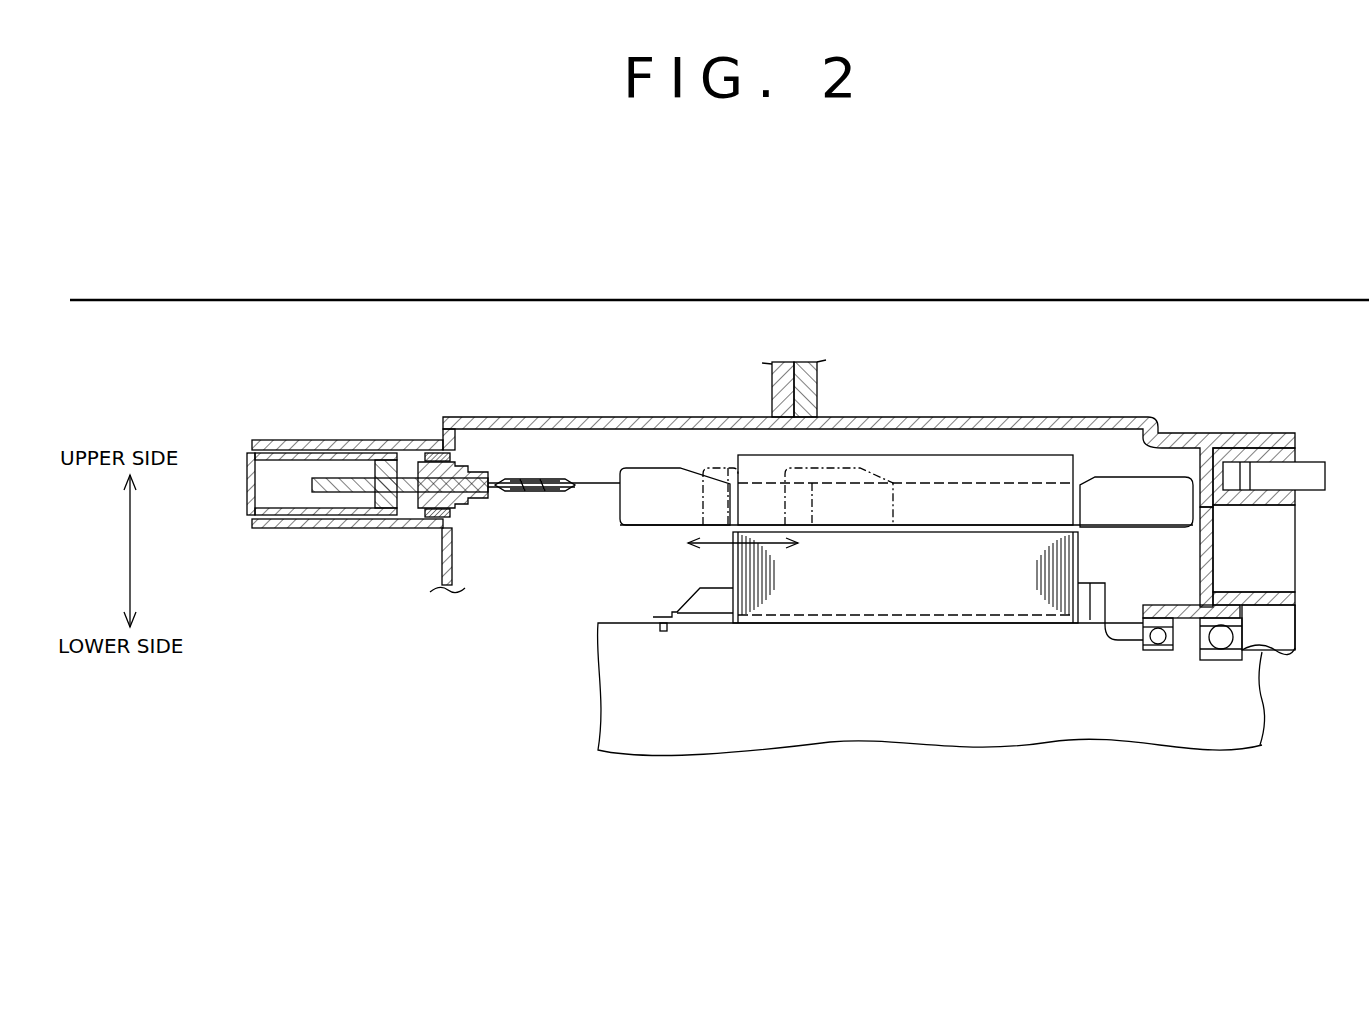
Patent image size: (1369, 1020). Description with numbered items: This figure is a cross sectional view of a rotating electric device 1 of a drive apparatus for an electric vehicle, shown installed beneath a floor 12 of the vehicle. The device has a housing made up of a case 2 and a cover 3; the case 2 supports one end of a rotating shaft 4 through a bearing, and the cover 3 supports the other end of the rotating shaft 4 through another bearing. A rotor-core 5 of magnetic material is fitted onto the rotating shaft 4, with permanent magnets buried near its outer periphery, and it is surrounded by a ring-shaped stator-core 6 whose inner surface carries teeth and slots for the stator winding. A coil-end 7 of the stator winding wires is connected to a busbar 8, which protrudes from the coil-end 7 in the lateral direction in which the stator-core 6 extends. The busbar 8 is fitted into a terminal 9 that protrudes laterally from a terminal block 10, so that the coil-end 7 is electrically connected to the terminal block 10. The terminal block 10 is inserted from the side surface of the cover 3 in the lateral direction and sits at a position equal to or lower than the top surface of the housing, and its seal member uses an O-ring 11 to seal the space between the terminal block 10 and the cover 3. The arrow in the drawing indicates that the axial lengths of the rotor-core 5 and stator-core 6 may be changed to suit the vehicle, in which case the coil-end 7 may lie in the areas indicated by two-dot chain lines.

The rotating electric device 1 is at (250, 430).
The case 2 is at (815, 385).
The cover 3 is at (352, 528).
The rotating shaft 4 is at (998, 722).
The rotor-core 5 is at (888, 583).
The stator-core 6 is at (940, 480).
The coil-end 7 is at (665, 495).
The busbar 8 is at (566, 480).
The terminal 9 is at (463, 470).
The terminal block 10 is at (390, 470).
The O-ring 11 is at (456, 521).
The floor 12 is at (707, 300).